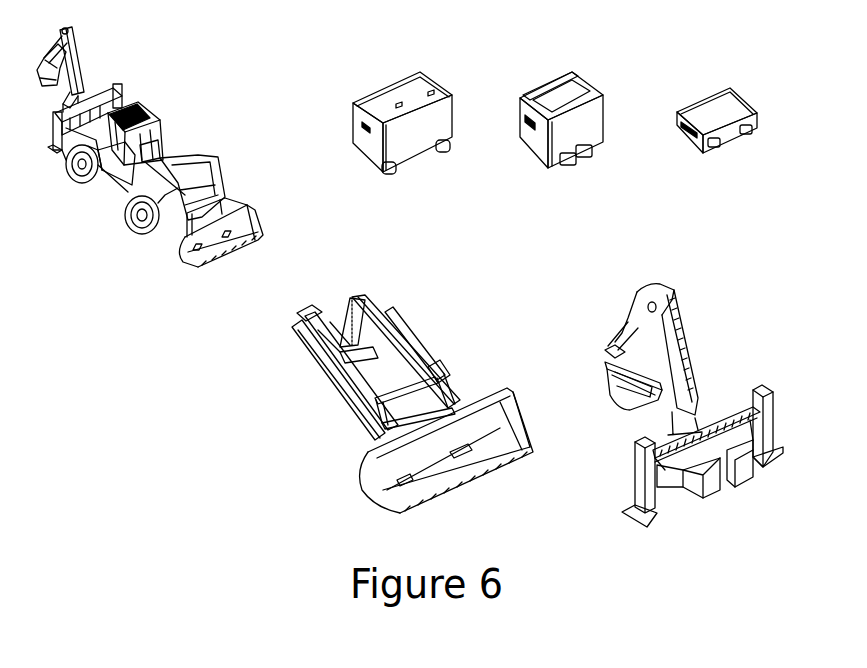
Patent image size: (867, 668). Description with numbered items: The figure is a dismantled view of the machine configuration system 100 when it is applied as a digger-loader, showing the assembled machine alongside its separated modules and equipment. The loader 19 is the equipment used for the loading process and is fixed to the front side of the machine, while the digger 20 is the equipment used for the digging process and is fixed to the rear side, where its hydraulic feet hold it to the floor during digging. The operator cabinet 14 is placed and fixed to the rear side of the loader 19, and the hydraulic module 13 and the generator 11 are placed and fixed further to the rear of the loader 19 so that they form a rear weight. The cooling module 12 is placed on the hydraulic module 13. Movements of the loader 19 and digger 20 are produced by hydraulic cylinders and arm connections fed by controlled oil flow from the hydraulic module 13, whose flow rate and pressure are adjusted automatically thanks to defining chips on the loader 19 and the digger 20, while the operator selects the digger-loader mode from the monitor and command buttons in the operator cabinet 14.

The machine configuration system 100 is at (150, 162).
The operator cabinet 14 is at (145, 120).
The generator 11 is at (417, 167).
The cooling module 12 is at (722, 168).
The hydraulic module 13 is at (583, 175).
The loader 19 is at (300, 375).
The digger 20 is at (603, 320).